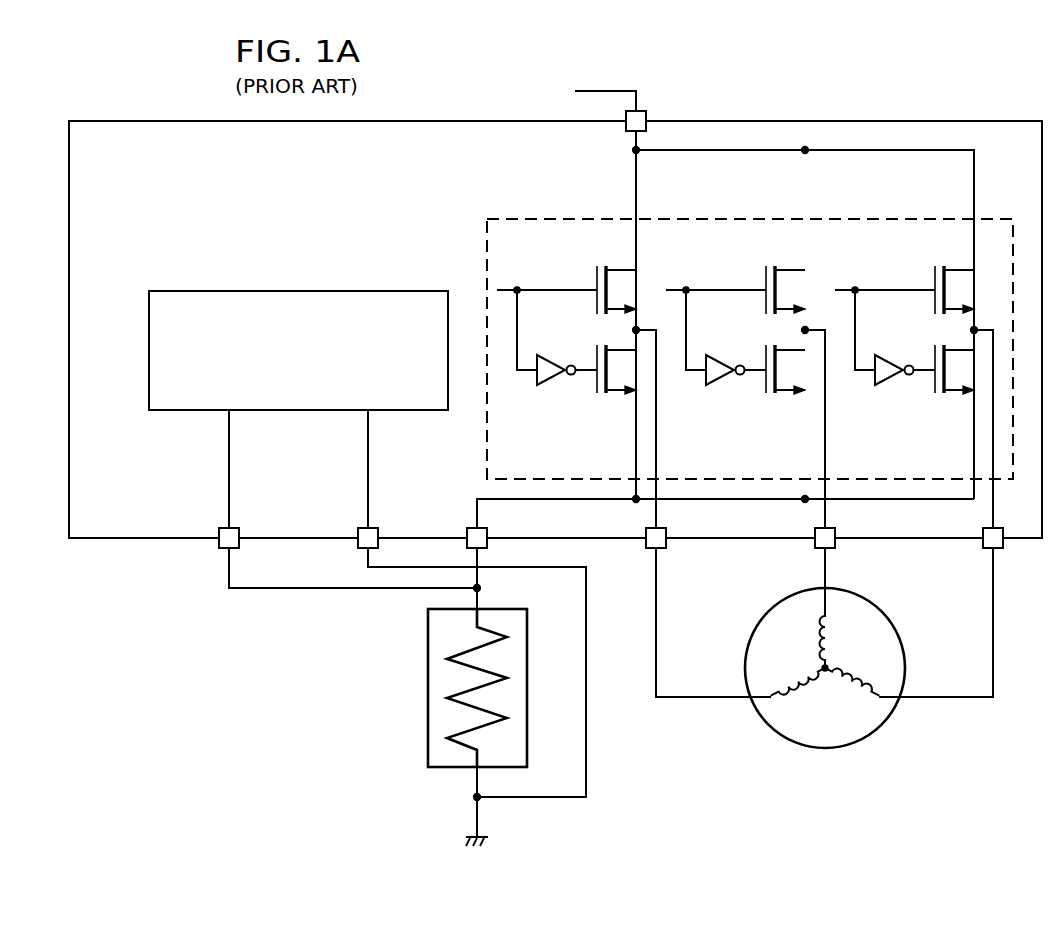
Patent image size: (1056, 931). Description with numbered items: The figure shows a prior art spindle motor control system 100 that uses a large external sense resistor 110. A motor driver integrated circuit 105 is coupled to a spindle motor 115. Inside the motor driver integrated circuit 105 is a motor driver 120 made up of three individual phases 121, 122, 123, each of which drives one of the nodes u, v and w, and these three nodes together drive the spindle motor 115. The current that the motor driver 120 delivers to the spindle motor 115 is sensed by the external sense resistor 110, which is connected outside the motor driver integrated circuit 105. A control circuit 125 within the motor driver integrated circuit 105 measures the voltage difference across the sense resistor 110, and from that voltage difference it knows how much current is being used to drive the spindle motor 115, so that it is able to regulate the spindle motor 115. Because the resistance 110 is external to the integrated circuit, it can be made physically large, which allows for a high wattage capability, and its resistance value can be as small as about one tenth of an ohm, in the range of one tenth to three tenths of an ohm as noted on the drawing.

The motor driving system 100 is at (835, 90).
The motor driver integrated circuit 105 is at (318, 236).
The external sense resistor 110 is at (428, 688).
The spindle motor 115 is at (857, 745).
The motor driver 120 is at (845, 218).
The first phase 121 is at (593, 396).
The second phase 122 is at (745, 397).
The third phase 123 is at (914, 397).
The control circuit 125 is at (149, 350).